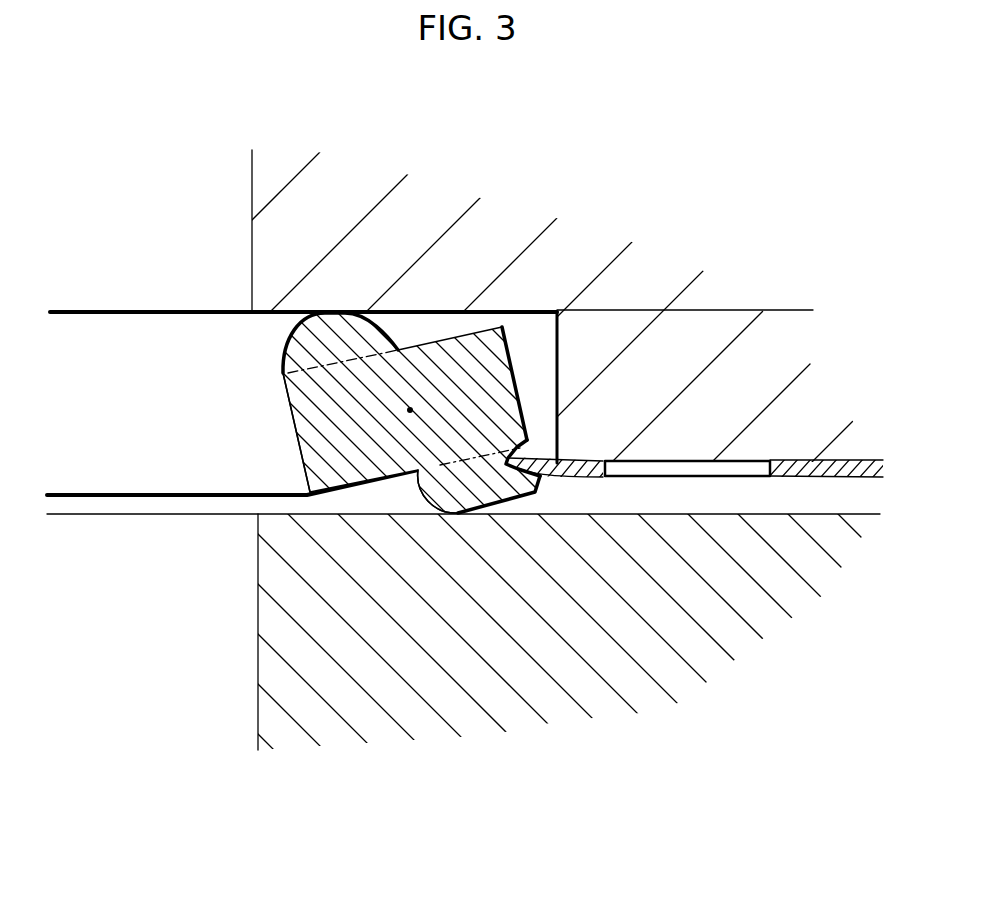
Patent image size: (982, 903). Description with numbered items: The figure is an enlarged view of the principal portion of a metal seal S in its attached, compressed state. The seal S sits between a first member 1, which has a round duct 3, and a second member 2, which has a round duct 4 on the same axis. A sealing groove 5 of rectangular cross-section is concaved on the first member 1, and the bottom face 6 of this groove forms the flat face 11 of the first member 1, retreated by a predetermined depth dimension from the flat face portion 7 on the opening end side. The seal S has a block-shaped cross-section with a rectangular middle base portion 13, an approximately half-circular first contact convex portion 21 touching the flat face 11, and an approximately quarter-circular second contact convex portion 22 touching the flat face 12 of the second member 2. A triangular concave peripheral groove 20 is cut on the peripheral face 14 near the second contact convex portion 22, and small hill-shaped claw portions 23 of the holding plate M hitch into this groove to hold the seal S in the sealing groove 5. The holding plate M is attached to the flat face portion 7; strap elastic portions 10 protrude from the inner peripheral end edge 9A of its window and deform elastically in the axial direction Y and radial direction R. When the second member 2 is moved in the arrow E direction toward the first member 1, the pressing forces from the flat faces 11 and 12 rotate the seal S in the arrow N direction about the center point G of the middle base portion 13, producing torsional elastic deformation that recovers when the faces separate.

The first member 1 is at (633, 299).
The second member 2 is at (645, 676).
The round duct 3 is at (140, 201).
The round duct 4 is at (142, 684).
The sealing groove 5 is at (443, 318).
The bottom face 6 is at (417, 415).
The flat face portion 7 is at (729, 448).
The inner peripheral end edge 9A is at (768, 468).
The strap elastic portion 10 is at (592, 463).
The flat face 11 is at (528, 306).
The flat face 12 is at (382, 513).
The middle base portion 13 is at (332, 450).
The peripheral face 14 is at (516, 373).
The concave peripheral groove 20 is at (525, 460).
The first contact convex portion 21 is at (312, 318).
The second contact convex portion 22 is at (493, 507).
The claw portion 23 is at (542, 496).